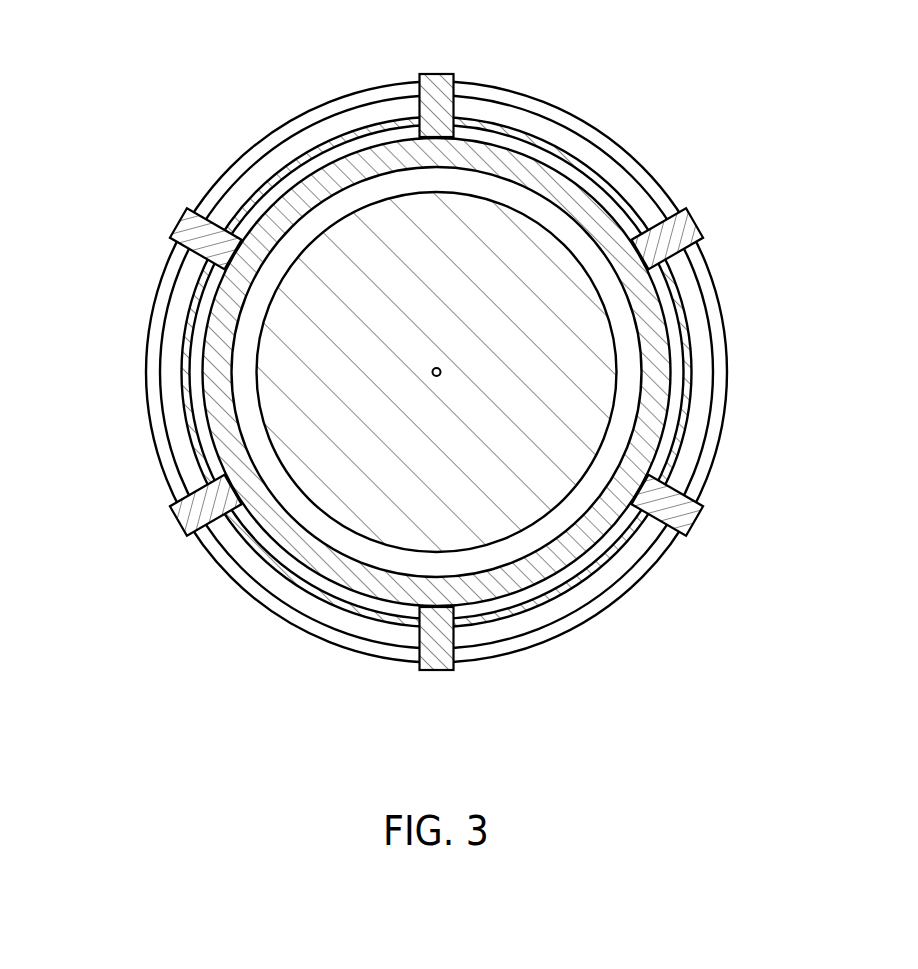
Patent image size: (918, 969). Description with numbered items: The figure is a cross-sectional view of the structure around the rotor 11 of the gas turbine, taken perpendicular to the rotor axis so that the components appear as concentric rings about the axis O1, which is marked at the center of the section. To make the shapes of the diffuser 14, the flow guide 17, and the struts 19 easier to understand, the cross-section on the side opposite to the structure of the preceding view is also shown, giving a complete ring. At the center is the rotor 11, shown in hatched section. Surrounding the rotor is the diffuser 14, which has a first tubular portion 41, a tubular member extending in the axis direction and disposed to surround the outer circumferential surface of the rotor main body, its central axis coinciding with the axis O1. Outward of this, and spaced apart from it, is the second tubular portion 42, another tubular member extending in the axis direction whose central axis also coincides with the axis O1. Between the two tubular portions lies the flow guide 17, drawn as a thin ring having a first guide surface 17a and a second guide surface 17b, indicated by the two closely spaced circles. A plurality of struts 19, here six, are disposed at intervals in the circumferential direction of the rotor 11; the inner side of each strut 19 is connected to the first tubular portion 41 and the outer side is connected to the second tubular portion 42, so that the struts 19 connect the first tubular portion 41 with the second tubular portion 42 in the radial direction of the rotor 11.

The rotor 11 is at (613, 403).
The diffuser 14 is at (253, 144).
The flow guide 17 is at (690, 327).
The first guide surface 17a is at (534, 143).
The second guide surface 17b is at (578, 153).
The struts 19 is at (438, 82).
The first tubular portion 41 is at (380, 153).
The second tubular portion 42 is at (327, 109).
The axis O1 is at (457, 392).